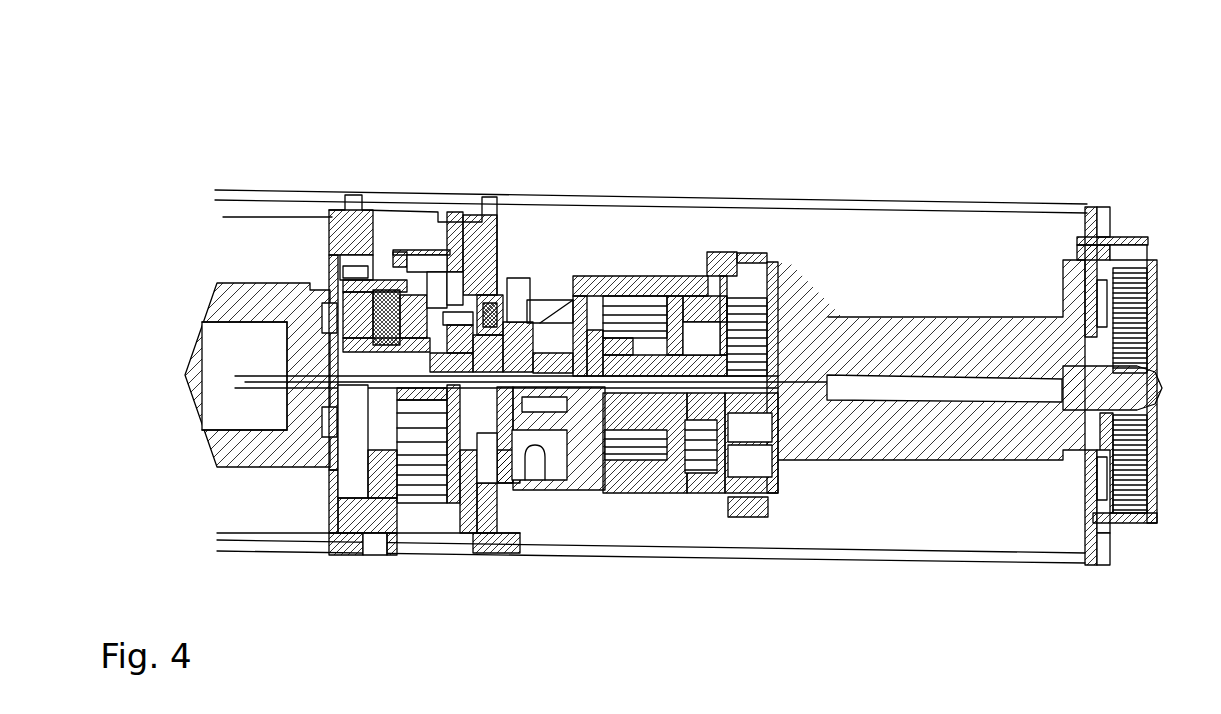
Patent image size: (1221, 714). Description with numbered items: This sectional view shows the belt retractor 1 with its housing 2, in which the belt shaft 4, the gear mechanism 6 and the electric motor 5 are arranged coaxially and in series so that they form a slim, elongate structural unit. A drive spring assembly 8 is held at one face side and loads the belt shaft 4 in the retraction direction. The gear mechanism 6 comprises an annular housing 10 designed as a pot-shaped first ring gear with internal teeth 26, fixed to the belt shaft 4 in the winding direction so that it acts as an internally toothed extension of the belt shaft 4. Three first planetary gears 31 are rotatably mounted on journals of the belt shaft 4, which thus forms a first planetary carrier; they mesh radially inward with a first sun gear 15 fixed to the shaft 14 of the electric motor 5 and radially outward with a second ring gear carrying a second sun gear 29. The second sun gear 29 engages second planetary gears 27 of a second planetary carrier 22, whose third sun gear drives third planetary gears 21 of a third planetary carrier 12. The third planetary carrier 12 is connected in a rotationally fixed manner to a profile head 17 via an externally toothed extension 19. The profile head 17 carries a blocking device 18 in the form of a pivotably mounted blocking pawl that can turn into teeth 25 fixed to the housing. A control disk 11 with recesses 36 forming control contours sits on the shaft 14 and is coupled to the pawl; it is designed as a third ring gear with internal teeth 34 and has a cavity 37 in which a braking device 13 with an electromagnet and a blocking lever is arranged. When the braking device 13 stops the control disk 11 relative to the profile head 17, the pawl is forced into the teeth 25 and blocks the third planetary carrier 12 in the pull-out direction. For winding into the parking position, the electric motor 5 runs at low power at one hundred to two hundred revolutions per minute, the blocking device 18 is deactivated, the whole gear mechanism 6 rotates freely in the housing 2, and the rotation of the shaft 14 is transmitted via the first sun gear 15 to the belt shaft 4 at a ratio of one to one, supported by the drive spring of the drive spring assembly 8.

The belt retractor 1 is at (673, 133).
The housing 2 is at (797, 207).
The belt shaft 4 is at (943, 343).
The electric motor 5 is at (252, 262).
The gear mechanism 6 is at (763, 588).
The drive spring assembly 8 is at (1147, 223).
The annular housing 10 is at (650, 483).
The control disk 11 is at (425, 503).
The third planetary carrier 12 is at (578, 277).
The braking device 13 is at (387, 262).
The shaft 14 is at (397, 377).
The first sun gear 15 is at (760, 400).
The profile head 17 is at (457, 320).
The blocking device 18 is at (480, 308).
The externally toothed extension 19 is at (553, 363).
The third planetary gears 21 is at (613, 360).
The second planetary carrier 22 is at (659, 348).
The teeth 25 is at (490, 473).
The internal teeth 26 is at (638, 282).
The second planetary gears 27 is at (702, 452).
The second sun gear 29 is at (707, 355).
The first planetary gears 31 is at (760, 457).
The internal teeth 34 is at (407, 463).
The recesses 36 is at (430, 280).
The cavity 37 is at (410, 257).